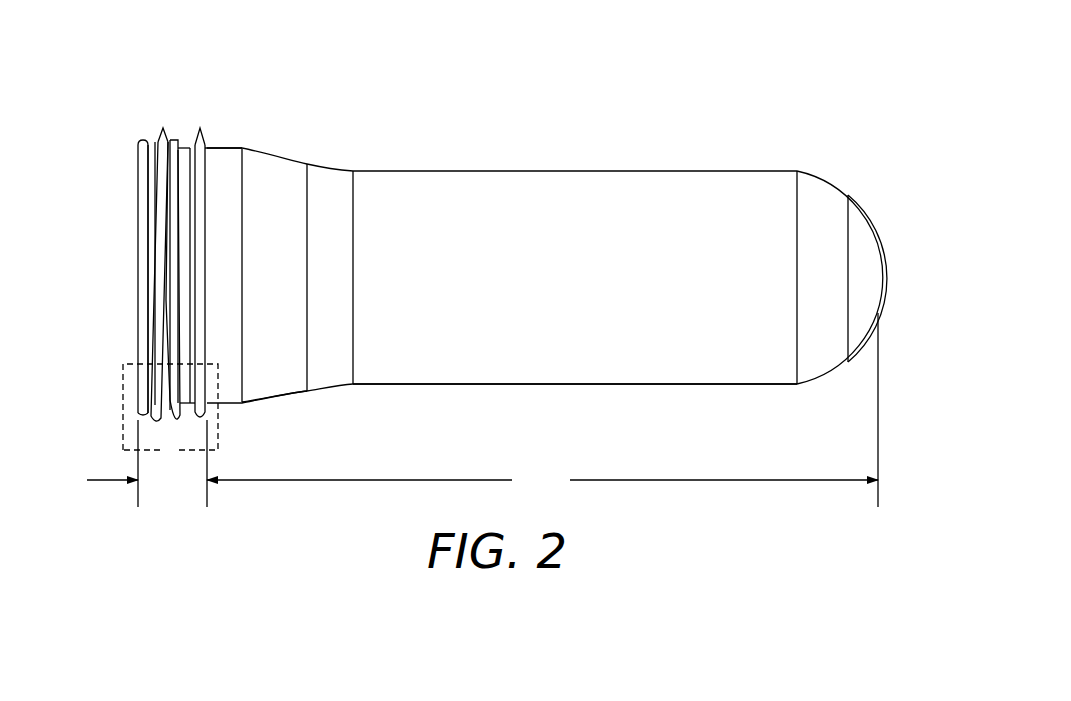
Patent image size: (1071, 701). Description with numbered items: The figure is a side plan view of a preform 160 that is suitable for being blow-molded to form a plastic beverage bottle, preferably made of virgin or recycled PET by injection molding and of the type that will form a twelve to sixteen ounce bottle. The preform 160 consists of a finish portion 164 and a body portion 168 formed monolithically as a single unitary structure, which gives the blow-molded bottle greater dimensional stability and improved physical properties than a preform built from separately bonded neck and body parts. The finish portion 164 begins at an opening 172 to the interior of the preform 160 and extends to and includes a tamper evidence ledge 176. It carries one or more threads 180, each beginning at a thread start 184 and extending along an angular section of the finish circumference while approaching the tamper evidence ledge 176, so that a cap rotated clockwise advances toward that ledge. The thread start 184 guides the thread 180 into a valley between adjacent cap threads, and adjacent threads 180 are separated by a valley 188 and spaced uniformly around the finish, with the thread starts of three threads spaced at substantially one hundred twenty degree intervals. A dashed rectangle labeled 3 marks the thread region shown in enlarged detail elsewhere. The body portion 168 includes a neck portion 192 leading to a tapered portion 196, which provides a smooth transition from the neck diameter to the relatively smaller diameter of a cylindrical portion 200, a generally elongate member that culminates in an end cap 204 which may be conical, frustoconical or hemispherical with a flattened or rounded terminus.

The preform 160 is at (563, 118).
The opening 172 is at (128, 275).
The tamper evidence ledge 176 is at (200, 128).
The threads 180 is at (163, 127).
The thread start 184 is at (160, 177).
The valley 188 is at (163, 210).
The neck portion 192 is at (220, 148).
The tapered portion 196 is at (290, 392).
The cylindrical portion 200 is at (647, 385).
The end cap 204 is at (879, 273).
The finish portion 164 is at (163, 463).
The body portion 168 is at (559, 410).
The detail area of FIG. 3 is at (123, 450).